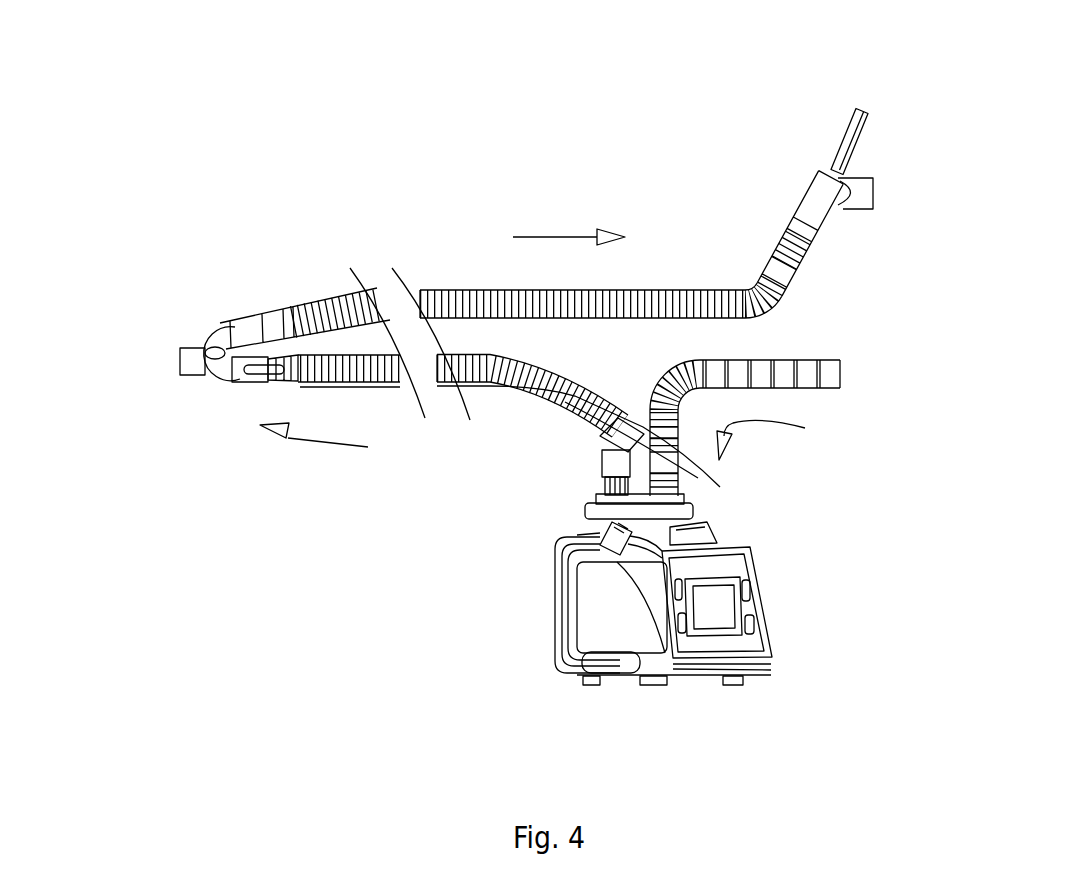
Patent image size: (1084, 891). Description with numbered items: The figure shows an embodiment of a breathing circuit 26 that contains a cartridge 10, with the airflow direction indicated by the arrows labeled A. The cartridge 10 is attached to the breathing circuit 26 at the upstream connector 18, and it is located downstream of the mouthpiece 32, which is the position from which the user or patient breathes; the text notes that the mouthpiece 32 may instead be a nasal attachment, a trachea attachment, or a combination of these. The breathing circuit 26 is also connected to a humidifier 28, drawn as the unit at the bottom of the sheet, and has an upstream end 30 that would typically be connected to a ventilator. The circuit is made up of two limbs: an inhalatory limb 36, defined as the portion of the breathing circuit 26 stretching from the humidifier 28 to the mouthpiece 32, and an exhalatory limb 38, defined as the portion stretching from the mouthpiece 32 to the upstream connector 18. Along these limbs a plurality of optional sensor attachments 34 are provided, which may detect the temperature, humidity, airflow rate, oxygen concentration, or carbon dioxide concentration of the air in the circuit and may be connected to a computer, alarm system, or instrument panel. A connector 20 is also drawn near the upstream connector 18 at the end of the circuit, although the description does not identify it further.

The cartridge 10 is at (760, 216).
The upstream connector 18 is at (768, 257).
The patient-end connector 20 is at (876, 180).
The breathing circuit 26 is at (230, 263).
The humidifier 28 is at (765, 560).
The upstream end 30 is at (838, 392).
The mouthpiece 32 is at (178, 360).
The sensor attachments 34 is at (841, 141).
The inhalatory limb 36 is at (490, 430).
The exhalatory limb 38 is at (427, 252).